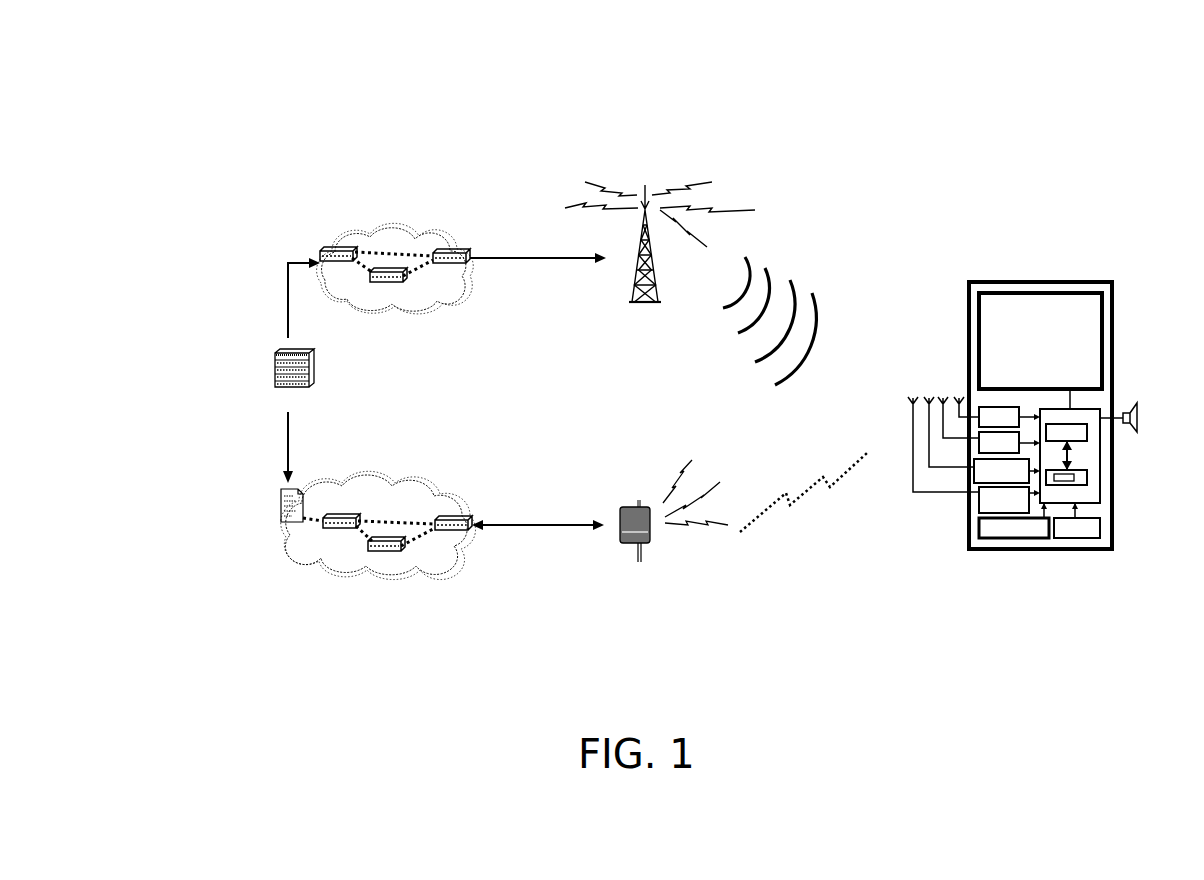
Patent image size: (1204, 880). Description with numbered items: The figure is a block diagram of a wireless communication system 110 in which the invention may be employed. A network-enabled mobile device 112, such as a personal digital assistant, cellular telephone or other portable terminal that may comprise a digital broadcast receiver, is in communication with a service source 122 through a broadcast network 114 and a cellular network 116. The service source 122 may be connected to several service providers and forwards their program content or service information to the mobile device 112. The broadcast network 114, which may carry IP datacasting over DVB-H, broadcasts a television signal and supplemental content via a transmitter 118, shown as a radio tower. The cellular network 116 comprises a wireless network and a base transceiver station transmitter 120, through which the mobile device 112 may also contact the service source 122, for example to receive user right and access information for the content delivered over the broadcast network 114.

The wireless communication system 110 is at (633, 98).
The mobile device 112 is at (1012, 553).
The broadcast network 114 is at (490, 278).
The cellular network 116 is at (528, 570).
The transmitter 118 is at (705, 247).
The base transceiver station transmitter 120 is at (700, 573).
The service source 122 is at (302, 387).